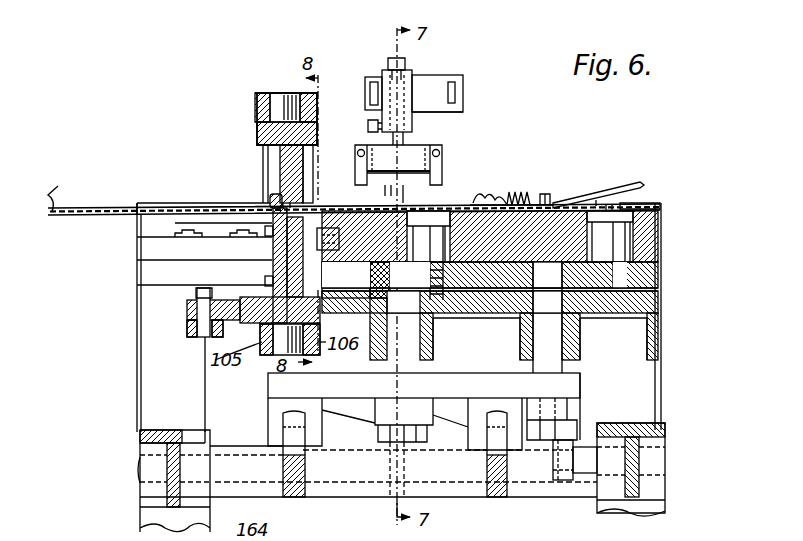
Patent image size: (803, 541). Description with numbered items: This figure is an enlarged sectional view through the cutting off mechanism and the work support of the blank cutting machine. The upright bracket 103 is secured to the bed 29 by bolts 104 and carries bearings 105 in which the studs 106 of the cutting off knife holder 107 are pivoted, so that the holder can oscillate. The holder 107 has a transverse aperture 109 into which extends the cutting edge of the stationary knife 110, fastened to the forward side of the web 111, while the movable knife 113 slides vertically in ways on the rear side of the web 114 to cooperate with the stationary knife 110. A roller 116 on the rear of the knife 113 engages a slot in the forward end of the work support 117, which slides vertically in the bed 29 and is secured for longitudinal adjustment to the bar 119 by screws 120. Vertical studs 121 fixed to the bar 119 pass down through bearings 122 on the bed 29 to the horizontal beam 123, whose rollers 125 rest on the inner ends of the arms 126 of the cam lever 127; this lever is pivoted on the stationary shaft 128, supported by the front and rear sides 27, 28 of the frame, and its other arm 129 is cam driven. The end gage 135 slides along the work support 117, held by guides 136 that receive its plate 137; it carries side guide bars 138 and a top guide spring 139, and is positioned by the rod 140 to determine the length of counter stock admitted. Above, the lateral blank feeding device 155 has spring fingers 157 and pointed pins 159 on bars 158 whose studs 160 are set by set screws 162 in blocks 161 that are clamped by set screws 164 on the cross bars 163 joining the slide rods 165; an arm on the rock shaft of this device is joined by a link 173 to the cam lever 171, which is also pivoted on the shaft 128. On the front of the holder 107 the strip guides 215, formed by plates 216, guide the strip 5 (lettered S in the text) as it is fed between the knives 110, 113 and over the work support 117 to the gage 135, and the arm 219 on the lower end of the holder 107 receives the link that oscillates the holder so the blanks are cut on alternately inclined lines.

The strip 5 is at (50, 188).
The frame 27 is at (137, 396).
The frame side 28 is at (662, 380).
The bed 29 is at (650, 306).
The upright bracket 103 is at (262, 95).
The bolts 104 is at (195, 244).
The bearings 105 is at (278, 108).
The studs 106 is at (258, 112).
The cutting off knife holder 107 is at (316, 132).
The transverse aperture 109 is at (310, 192).
The stationary knife 110 is at (282, 158).
The web 111 is at (305, 172).
The knife 113 is at (306, 203).
The web 114 is at (262, 231).
The roller 116 is at (353, 265).
The work support 117 is at (492, 200).
The bar 119 is at (658, 271).
The screws 120 is at (440, 211).
The vertical studs 121 is at (540, 332).
The bearings 122 is at (420, 353).
The horizontal beam 123 is at (575, 386).
The rollers 125 is at (292, 421).
The arms 126 is at (300, 498).
The cam lever 127 is at (360, 498).
The stationary shaft 128 is at (138, 478).
The arm 129 is at (405, 470).
The end gage 135 is at (535, 200).
The guides 136 is at (638, 200).
The plate 137 is at (600, 196).
The side guide bars 138 is at (540, 200).
The top guide spring 139 is at (487, 195).
The rod 140 is at (580, 197).
The left hand lateral blank feeding device 155 is at (463, 78).
The vertical spring fingers 157 is at (440, 162).
The bars 158 is at (398, 165).
The vertical pins 159 is at (416, 192).
The studs 160 is at (404, 143).
The blocks 161 is at (408, 85).
The set screws 162 is at (367, 124).
The cross bars 163 is at (438, 83).
The set screws 164 is at (393, 58).
The slide rods 165 is at (456, 93).
The cam lever 171 is at (586, 475).
The links 173 is at (560, 482).
The strip guides 215 is at (270, 203).
The plates 216 is at (273, 262).
The arm 219 is at (187, 315).